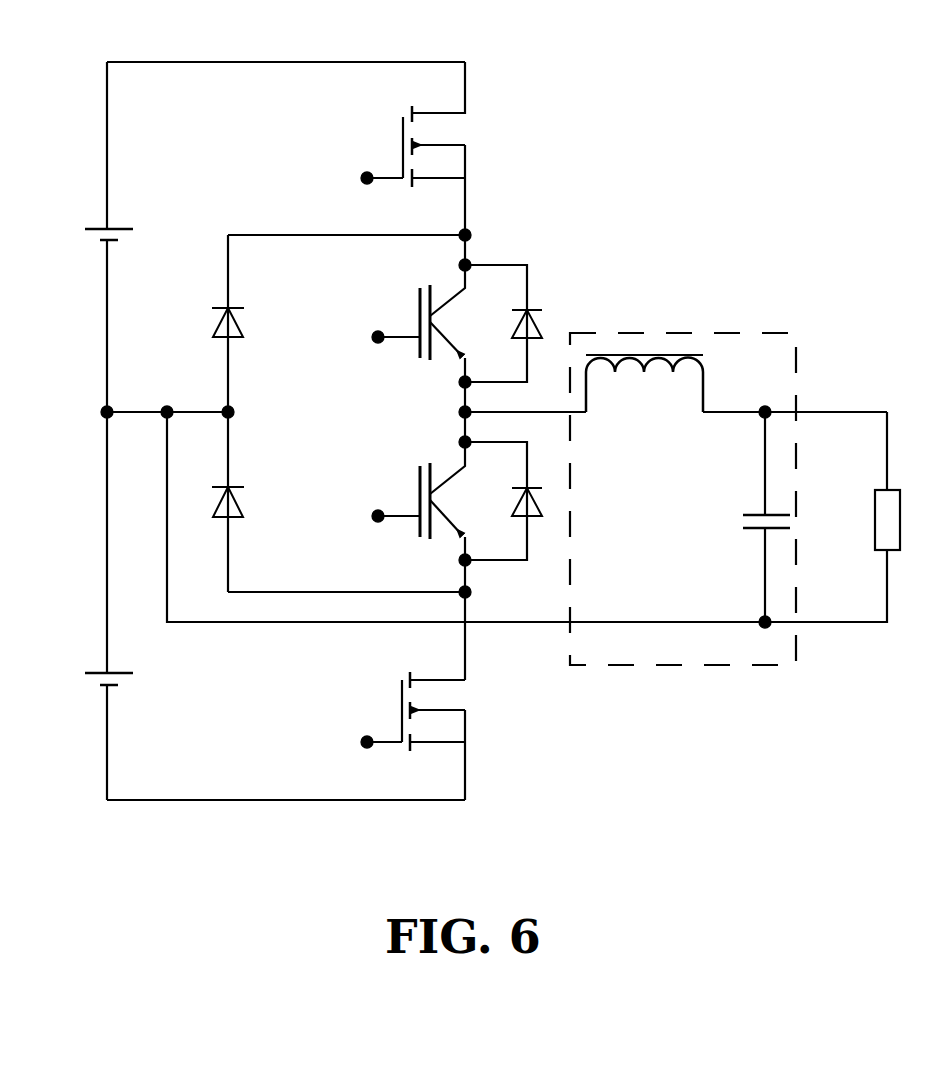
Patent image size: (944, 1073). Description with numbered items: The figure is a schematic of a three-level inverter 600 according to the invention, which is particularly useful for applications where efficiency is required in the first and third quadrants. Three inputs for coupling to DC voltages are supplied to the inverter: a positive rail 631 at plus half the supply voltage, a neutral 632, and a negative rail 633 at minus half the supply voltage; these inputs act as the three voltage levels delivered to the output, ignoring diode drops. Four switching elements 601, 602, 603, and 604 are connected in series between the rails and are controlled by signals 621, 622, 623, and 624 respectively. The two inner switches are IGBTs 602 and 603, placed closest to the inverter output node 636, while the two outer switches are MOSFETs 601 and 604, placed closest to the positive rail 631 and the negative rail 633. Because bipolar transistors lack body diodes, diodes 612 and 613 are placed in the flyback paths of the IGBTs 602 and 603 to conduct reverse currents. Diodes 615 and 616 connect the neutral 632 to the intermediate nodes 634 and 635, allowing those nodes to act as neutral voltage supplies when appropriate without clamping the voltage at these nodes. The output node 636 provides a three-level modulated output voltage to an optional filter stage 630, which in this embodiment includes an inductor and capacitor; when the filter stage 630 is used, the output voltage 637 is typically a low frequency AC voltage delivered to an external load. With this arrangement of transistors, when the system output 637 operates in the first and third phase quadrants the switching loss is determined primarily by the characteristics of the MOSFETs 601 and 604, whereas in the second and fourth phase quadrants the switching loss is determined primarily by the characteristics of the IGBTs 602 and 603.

The three-level inverter 600 is at (655, 248).
The MOSFET switching element 601 is at (408, 148).
The IGBT switching element 602 is at (415, 323).
The IGBT switching element 603 is at (415, 501).
The MOSFET switching element 604 is at (408, 736).
The diode 612 is at (519, 323).
The diode 613 is at (519, 501).
The diode 615 is at (213, 323).
The diode 616 is at (213, 502).
The control signal 621 is at (359, 179).
The control signal 622 is at (372, 337).
The control signal 623 is at (372, 516).
The control signal 624 is at (359, 743).
The filter stage 630 is at (691, 680).
The positive rail 631 is at (341, 47).
The neutral 632 is at (96, 410).
The negative rail 633 is at (247, 805).
The node 634 is at (478, 230).
The node 635 is at (476, 593).
The output node 636 is at (462, 410).
The output voltage 637 is at (773, 406).